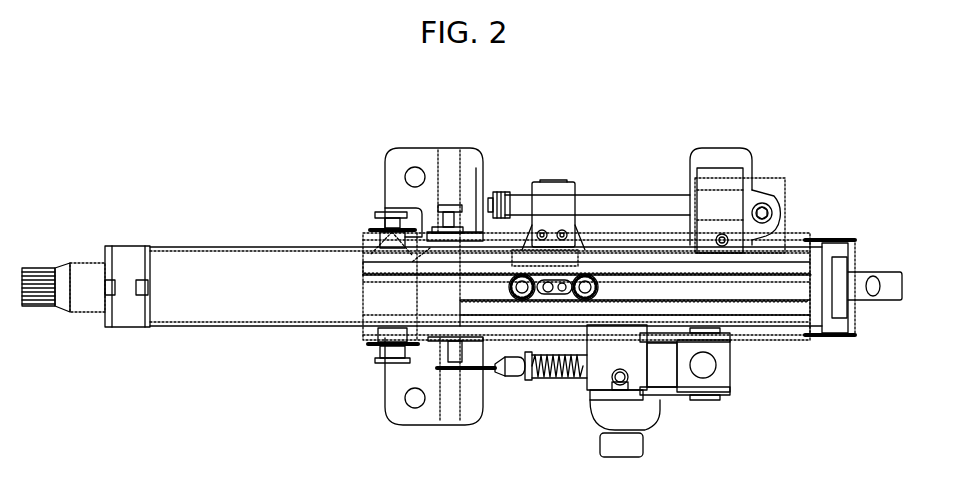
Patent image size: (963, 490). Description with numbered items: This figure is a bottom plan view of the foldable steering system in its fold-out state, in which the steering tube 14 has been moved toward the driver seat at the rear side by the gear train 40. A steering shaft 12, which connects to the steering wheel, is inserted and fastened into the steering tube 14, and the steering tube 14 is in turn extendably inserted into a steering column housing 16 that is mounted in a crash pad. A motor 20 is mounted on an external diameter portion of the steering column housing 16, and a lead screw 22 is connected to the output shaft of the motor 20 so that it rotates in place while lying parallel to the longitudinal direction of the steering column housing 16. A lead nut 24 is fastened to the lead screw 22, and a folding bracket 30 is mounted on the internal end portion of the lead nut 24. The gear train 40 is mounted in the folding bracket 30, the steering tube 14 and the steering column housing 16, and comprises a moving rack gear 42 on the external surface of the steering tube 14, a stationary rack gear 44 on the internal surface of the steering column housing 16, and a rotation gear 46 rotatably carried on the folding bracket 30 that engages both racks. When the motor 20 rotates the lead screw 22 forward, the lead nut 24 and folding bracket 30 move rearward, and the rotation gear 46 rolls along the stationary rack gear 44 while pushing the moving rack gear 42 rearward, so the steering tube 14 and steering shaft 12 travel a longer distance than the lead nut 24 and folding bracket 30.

The steering shaft 12 is at (86, 300).
The steering tube 14 is at (202, 317).
The steering column housing 16 is at (645, 240).
The motor 20 is at (728, 152).
The lead screw 22 is at (580, 195).
The lead nut 24 is at (540, 182).
The folding bracket 30 is at (588, 240).
The gear train 40 is at (496, 311).
The moving rack gear 42 is at (487, 283).
The stationary rack gear 44 is at (410, 352).
The rotation gear 46 is at (585, 300).